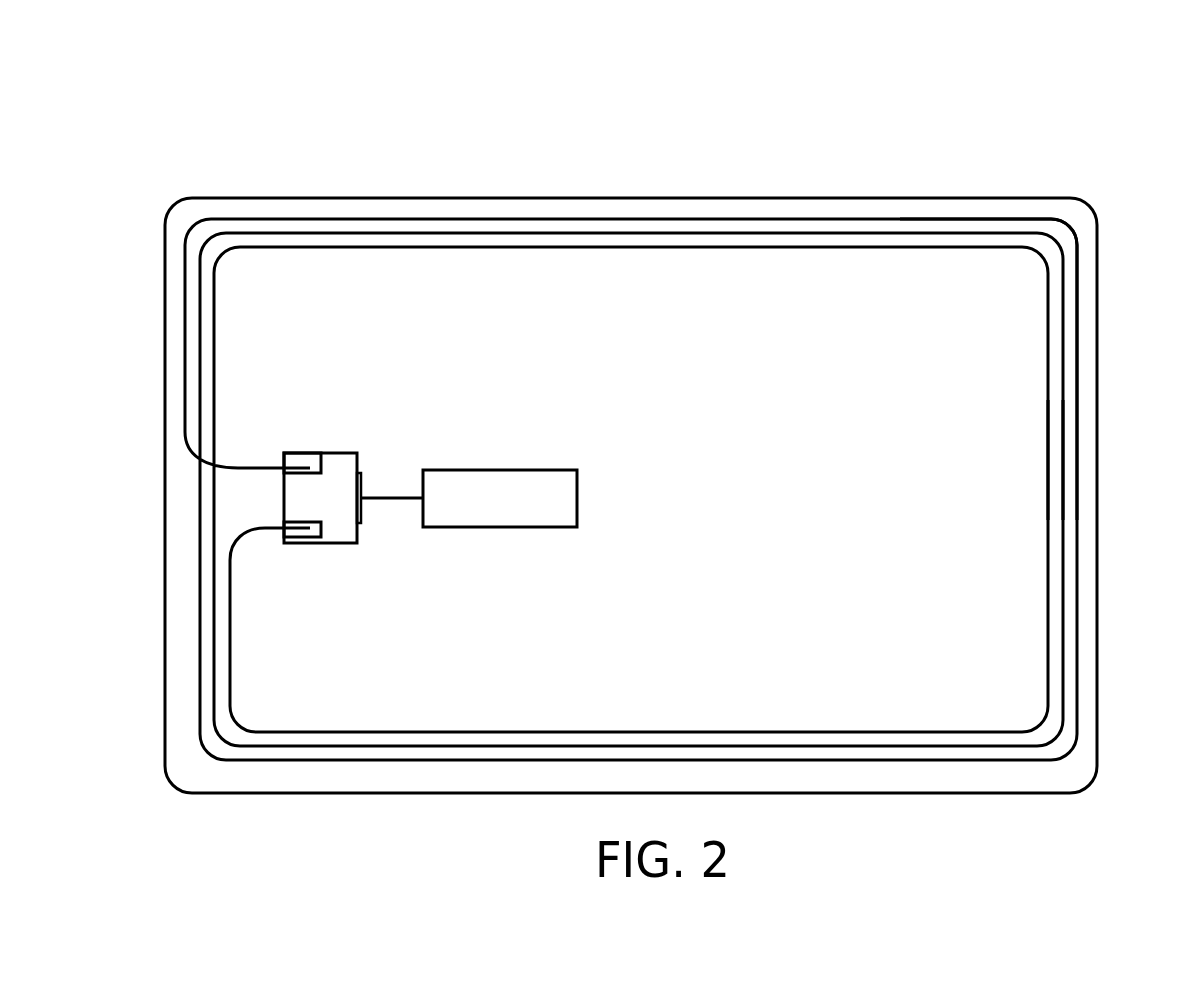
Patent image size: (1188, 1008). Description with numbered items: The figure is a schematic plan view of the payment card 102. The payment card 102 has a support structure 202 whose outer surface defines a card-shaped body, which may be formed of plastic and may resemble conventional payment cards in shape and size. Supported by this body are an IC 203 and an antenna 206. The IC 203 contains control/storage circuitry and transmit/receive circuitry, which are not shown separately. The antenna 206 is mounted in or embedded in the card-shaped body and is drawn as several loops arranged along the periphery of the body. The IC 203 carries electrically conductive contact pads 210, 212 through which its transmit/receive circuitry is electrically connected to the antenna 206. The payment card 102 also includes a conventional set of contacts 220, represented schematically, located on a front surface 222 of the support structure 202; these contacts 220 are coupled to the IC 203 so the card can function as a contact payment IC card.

The payment card 102 is at (226, 122).
The support structure 202 is at (628, 291).
The IC 203 is at (358, 463).
The antenna 206 is at (1003, 219).
The contact pad 210 is at (300, 452).
The contact pad 212 is at (303, 538).
The contacts 220 is at (500, 528).
The front surface 222 is at (960, 488).